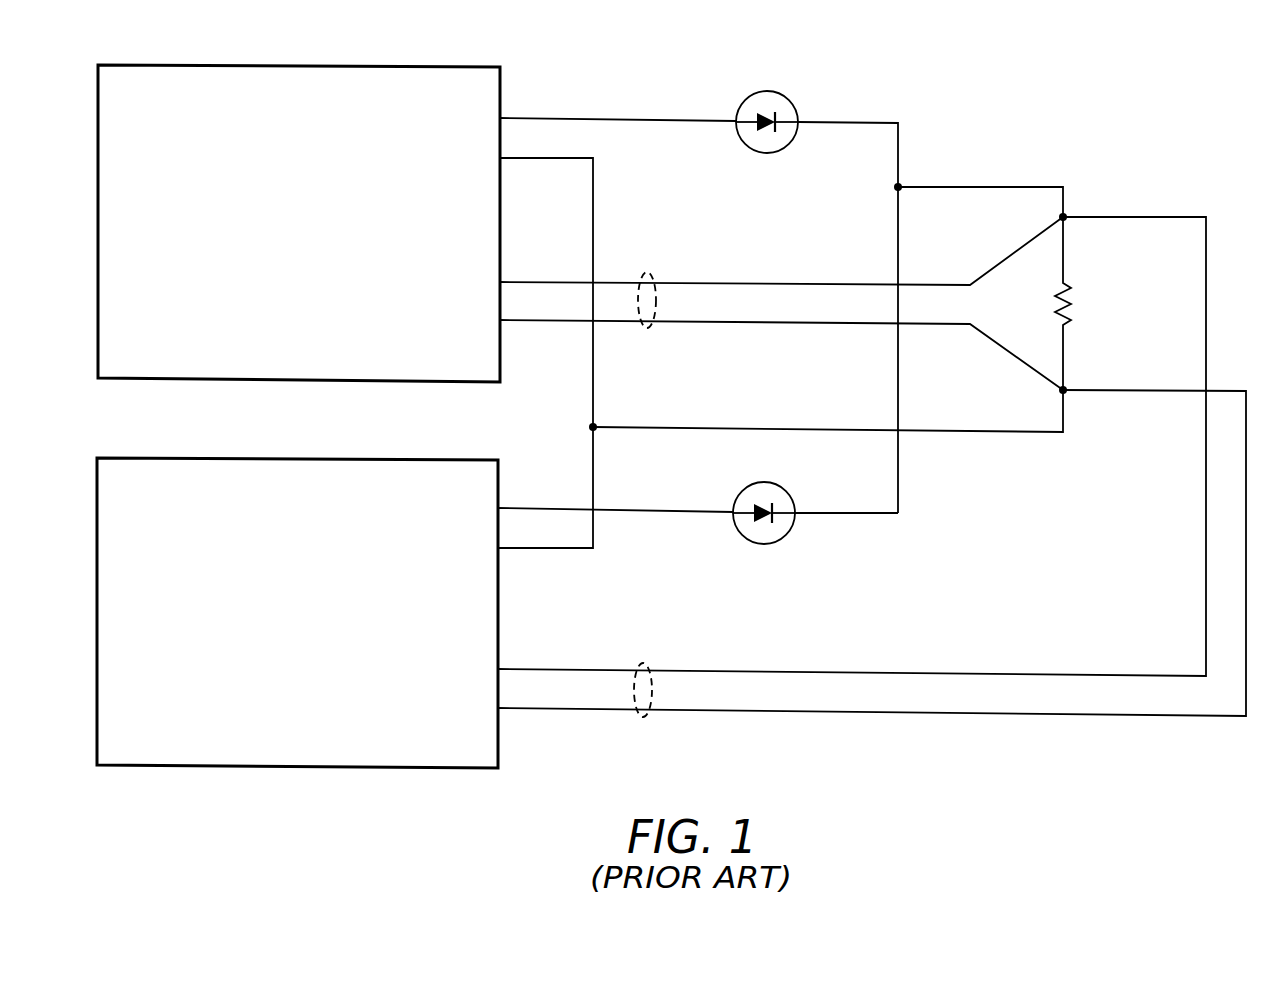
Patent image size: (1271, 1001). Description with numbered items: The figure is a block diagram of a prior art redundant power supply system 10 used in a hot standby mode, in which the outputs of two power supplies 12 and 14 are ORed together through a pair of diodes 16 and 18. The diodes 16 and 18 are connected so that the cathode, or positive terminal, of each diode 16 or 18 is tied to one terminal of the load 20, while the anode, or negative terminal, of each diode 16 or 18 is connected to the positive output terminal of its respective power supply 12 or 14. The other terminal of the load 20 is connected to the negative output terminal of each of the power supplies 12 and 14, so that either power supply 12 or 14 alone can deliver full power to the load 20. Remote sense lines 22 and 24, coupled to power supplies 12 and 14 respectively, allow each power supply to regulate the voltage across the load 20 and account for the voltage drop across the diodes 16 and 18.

The prior art redundant power supply system 10 is at (1131, 90).
The power supply 12 is at (403, 67).
The power supply 14 is at (400, 460).
The diode 16 is at (769, 91).
The diode 18 is at (786, 531).
The load 20 is at (1142, 339).
The remote sense lines 22 is at (647, 272).
The remote sense lines 24 is at (644, 663).